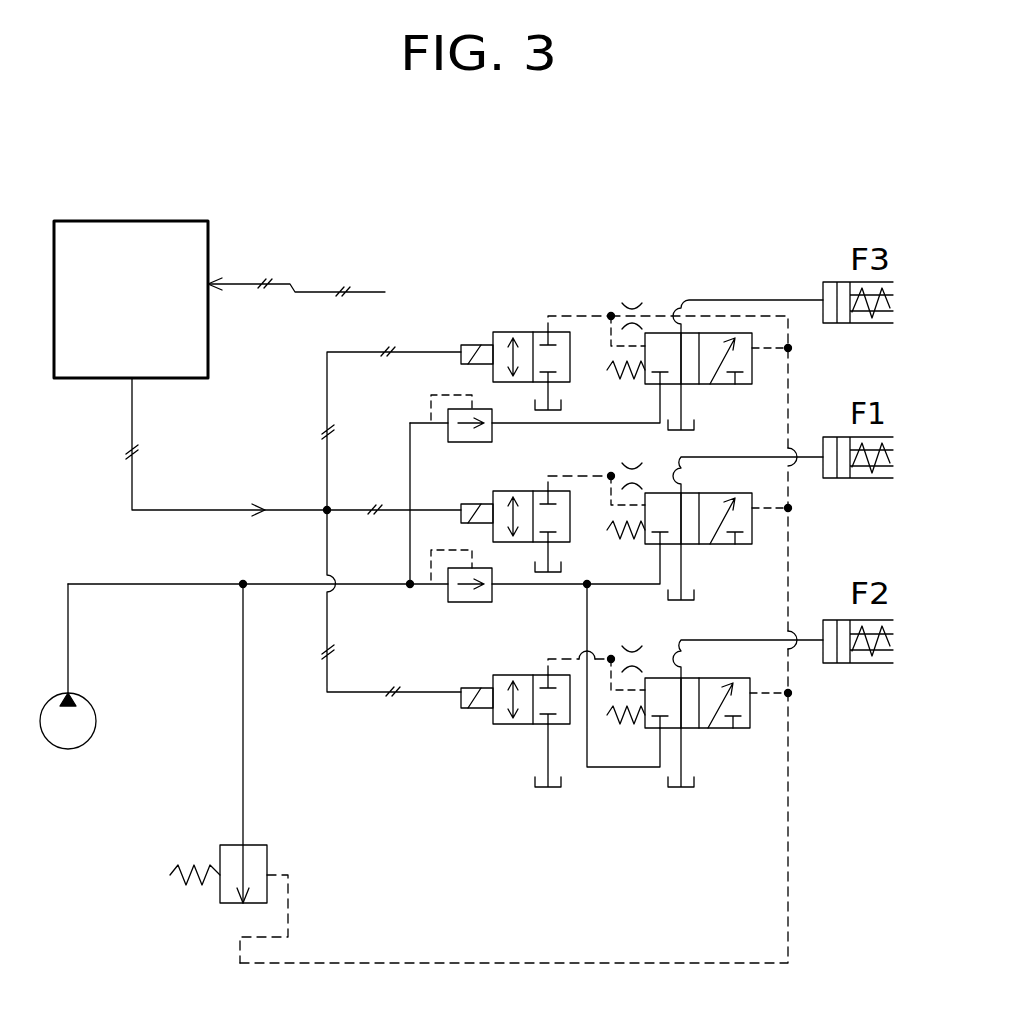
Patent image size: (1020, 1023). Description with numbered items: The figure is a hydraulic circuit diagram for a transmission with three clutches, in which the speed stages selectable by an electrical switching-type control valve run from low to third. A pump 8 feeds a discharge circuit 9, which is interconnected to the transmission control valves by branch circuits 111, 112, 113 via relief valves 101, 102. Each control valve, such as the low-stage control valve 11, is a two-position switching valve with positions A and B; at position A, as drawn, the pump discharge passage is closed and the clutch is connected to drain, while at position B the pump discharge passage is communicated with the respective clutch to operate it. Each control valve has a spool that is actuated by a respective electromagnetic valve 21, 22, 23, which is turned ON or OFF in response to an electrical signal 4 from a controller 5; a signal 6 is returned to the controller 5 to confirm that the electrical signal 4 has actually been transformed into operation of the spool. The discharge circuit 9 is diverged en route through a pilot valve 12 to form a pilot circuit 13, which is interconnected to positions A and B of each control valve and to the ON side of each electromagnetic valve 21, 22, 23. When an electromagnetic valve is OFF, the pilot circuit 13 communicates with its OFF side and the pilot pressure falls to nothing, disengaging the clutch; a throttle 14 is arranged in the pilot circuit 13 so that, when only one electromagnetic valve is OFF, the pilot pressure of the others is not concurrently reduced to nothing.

The controller 5 is at (126, 221).
The signal 6 is at (300, 284).
The electrical signal 4 is at (218, 510).
The discharge circuit 9 is at (198, 584).
The pump 8 is at (92, 740).
The pilot valve 12 is at (268, 862).
The pilot circuit 13 is at (415, 963).
The control valve 11 is at (752, 528).
The electromagnetic valve 21 is at (483, 505).
The electromagnetic valve 22 is at (477, 690).
The electromagnetic valve 23 is at (472, 345).
The relief valve 101 is at (446, 592).
The relief valve 102 is at (448, 418).
The branch circuit 111 is at (603, 586).
The branch circuit 112 is at (620, 768).
The branch circuit 113 is at (605, 424).
The throttle 14 is at (641, 294).